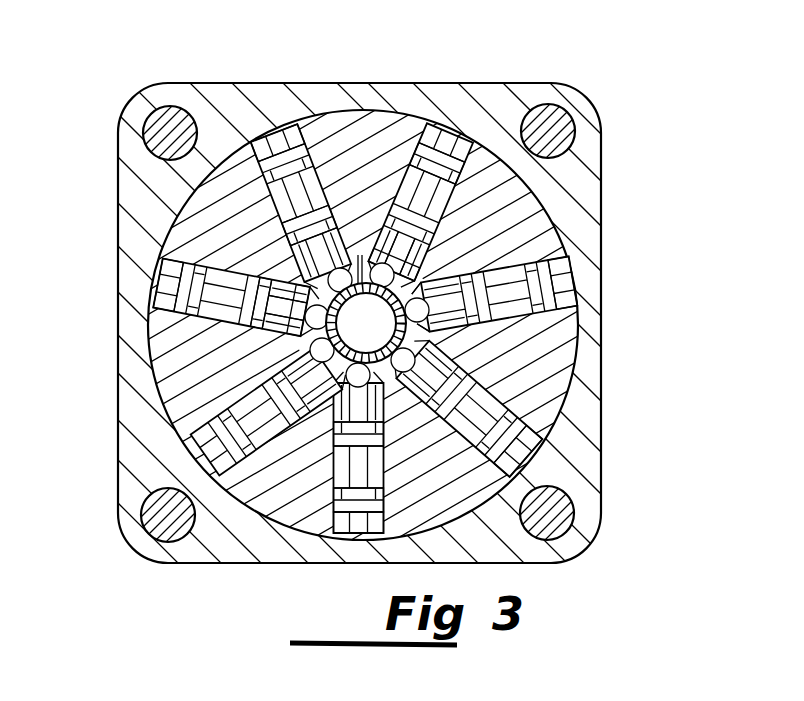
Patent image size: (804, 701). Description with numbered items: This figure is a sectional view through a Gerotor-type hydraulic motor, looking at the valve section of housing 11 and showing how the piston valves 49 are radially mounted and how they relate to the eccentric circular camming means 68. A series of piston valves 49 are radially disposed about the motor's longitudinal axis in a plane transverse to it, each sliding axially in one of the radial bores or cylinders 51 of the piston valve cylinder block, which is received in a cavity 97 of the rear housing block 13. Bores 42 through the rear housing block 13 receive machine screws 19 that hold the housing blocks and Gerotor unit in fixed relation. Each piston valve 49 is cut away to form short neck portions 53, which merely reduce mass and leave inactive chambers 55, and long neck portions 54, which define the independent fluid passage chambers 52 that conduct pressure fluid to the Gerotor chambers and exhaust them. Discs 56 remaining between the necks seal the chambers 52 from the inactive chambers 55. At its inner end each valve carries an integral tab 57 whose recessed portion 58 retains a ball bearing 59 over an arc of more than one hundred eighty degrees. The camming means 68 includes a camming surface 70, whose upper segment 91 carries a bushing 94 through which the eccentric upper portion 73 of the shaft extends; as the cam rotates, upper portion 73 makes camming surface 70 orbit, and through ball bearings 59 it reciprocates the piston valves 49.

The housing 11 is at (593, 74).
The rear housing block 13 is at (218, 112).
The machine screws 19 is at (143, 127).
The bores 42 is at (150, 125).
The piston valves 49 is at (290, 118).
The radial bores or cylinders 51 is at (252, 143).
The independent fluid passage chambers 52 is at (403, 179).
The short neck portions 53 is at (183, 308).
The long neck portions 54 is at (437, 203).
The chambers 55 is at (266, 174).
The discs 56 is at (458, 162).
The tabs 57 is at (258, 320).
The recessed portions 58 is at (313, 308).
The ball bearings 59 is at (418, 282).
The eccentric circular camming means 68 is at (360, 225).
The camming surface 70 is at (427, 337).
The upper portion of shaft 73 is at (366, 323).
The upper segment of camming surface 91 is at (383, 387).
The bushing 94 is at (343, 300).
The cavity 97 is at (572, 317).